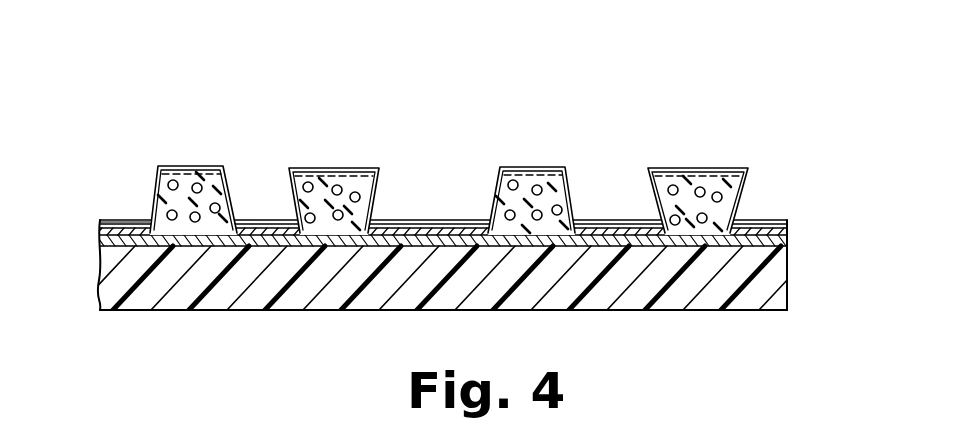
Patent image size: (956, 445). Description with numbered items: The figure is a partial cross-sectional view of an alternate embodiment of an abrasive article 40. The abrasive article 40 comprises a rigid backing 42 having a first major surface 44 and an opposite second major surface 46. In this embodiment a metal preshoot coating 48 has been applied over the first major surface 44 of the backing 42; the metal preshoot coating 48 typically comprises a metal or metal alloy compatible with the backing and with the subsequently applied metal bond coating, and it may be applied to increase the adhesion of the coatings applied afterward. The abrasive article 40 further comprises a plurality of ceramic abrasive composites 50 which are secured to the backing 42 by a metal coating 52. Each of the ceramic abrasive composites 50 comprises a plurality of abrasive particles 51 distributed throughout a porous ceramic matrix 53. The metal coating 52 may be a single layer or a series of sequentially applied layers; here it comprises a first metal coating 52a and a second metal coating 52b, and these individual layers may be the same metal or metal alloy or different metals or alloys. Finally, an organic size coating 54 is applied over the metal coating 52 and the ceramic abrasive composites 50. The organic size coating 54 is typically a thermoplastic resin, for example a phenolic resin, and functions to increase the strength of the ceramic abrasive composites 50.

The abrasive article 40 is at (158, 84).
The rigid backing 42 is at (152, 290).
The first major surface 44 is at (608, 235).
The second major surface 46 is at (673, 313).
The metal preshoot coating 48 is at (105, 238).
The ceramic abrasive composites 50 is at (283, 162).
The abrasive particles 51 is at (361, 196).
The metal coating 52 is at (485, 195).
The first metal coating 52a is at (767, 225).
The second metal coating 52b is at (752, 227).
The porous ceramic matrix 53 is at (328, 186).
The organic size coating 54 is at (124, 220).